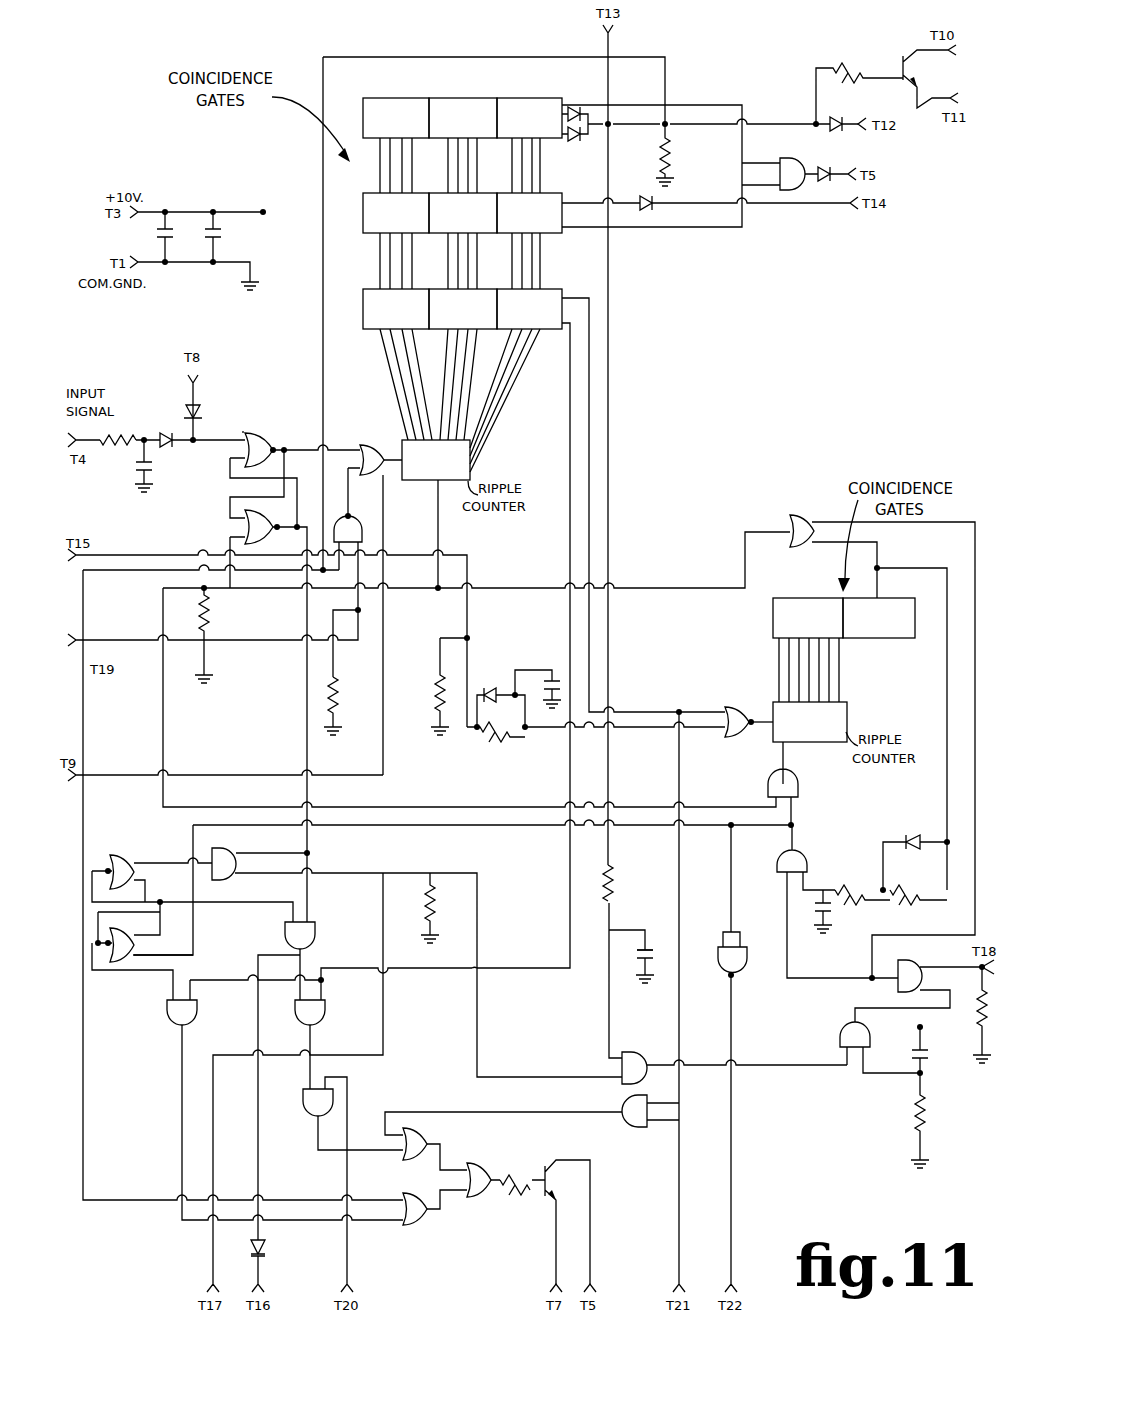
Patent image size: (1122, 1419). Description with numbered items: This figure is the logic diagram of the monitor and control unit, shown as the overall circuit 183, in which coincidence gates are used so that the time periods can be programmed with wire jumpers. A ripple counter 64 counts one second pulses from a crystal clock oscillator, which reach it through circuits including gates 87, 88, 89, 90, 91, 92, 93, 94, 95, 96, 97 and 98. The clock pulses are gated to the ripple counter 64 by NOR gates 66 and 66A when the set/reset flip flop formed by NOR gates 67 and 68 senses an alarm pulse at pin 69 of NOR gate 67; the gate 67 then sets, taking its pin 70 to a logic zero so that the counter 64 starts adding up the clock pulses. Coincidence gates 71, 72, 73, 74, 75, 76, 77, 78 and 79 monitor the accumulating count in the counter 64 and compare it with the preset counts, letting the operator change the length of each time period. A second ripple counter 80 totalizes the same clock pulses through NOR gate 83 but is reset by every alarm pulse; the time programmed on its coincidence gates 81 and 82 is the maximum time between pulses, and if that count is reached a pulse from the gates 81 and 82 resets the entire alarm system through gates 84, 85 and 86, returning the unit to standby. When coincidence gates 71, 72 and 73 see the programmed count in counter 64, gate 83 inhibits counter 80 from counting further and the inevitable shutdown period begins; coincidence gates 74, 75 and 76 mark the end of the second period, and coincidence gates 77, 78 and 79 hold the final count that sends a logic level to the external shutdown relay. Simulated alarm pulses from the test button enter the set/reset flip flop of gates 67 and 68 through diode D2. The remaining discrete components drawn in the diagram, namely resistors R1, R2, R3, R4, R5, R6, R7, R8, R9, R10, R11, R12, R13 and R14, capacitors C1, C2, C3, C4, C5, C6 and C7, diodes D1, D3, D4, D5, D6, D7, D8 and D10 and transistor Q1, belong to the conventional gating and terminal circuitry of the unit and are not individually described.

The ripple counter 64 is at (448, 472).
The NOR gate 66 is at (364, 446).
The NOR gate 66A is at (362, 522).
The NOR gate 67 is at (260, 437).
The NOR gate 68 is at (243, 530).
The pin 69 is at (247, 433).
The pin 70 is at (284, 448).
The coincidence gate 71 is at (405, 321).
The coincidence gate 72 is at (472, 321).
The coincidence gate 73 is at (539, 321).
The coincidence gate 74 is at (405, 225).
The coincidence gate 75 is at (472, 225).
The coincidence gate 76 is at (539, 225).
The coincidence gate 77 is at (405, 130).
The coincidence gate 78 is at (472, 130).
The coincidence gate 79 is at (539, 130).
The ripple counter 80 is at (820, 735).
The coincidence gate 81 is at (818, 630).
The coincidence gate 82 is at (888, 630).
The NOR gate 83 is at (734, 708).
The gate 84 is at (798, 792).
The gate 85 is at (803, 859).
The gate 86 is at (796, 550).
The gate 87 is at (225, 853).
The gate 88 is at (285, 936).
The gate 89 is at (316, 1022).
The gate 90 is at (309, 1104).
The gate 91 is at (169, 1024).
The gate 92 is at (122, 858).
The gate 93 is at (123, 960).
The gate 94 is at (420, 1138).
The gate 95 is at (410, 1222).
The gate 96 is at (470, 1164).
The gate 97 is at (634, 1057).
The gate 98 is at (624, 1129).
The control circuit 183 is at (708, 464).
The resistor R1 is at (118, 431).
The resistor R2 is at (213, 635).
The resistor R3 is at (342, 706).
The resistor R4 is at (438, 686).
The resistor R5 is at (496, 739).
The resistor R6 is at (674, 155).
The resistor R7 is at (862, 886).
The resistor R8 is at (918, 886).
The resistor R9 is at (970, 1015).
The resistor R10 is at (933, 1120).
The resistor R11 is at (624, 883).
The resistor R12 is at (428, 972).
The resistor R13 is at (515, 1175).
The resistor R14 is at (859, 86).
The capacitor C1 is at (154, 466).
The capacitor C2 is at (538, 689).
The capacitor C3 is at (632, 956).
The capacitor C4 is at (813, 911).
The capacitor C5 is at (930, 1050).
The capacitor C6 is at (155, 237).
The capacitor C7 is at (223, 237).
The diode D1 is at (162, 430).
The diode D2 is at (203, 414).
The diode D3 is at (501, 698).
The diode D4 is at (915, 854).
The diode D5 is at (580, 106).
The diode D6 is at (580, 141).
The diode D7 is at (836, 117).
The diode D8 is at (824, 167).
The zener diode D10 is at (273, 1249).
The transistor Q1 is at (567, 1222).